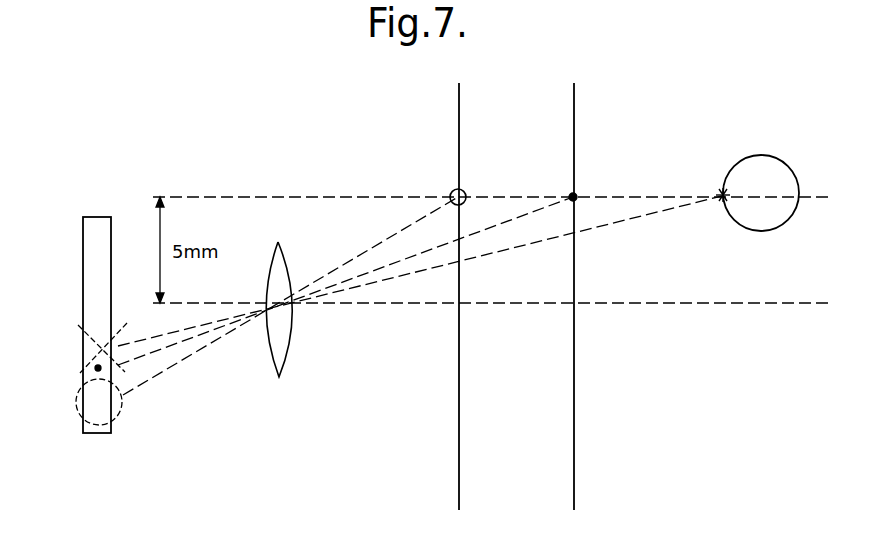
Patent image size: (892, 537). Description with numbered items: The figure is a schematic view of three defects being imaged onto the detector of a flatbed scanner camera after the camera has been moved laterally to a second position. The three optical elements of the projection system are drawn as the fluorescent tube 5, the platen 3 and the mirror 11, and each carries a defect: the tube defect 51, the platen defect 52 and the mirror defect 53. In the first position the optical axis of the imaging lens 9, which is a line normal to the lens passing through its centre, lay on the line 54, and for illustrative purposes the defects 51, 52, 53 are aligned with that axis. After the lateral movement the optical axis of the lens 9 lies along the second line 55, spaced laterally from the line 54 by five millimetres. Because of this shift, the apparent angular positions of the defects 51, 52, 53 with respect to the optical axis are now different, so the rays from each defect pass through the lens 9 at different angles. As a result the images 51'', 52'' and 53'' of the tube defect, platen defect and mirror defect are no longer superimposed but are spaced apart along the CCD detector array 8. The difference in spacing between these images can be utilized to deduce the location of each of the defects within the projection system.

The platen 3 is at (576, 455).
The fluorescent tube 5 is at (757, 231).
The CCD detector array 8 is at (95, 215).
The imaging lens 9 is at (272, 368).
The mirror 11 is at (459, 458).
The tube defect 51 is at (713, 173).
The platen defect 52 is at (590, 174).
The mirror defect 53 is at (436, 178).
The line 54 is at (202, 195).
The second line 55 is at (435, 305).
The image of tube defect 51'' is at (88, 319).
The image of platen defect 52'' is at (67, 378).
The image of mirror defect 53'' is at (121, 416).